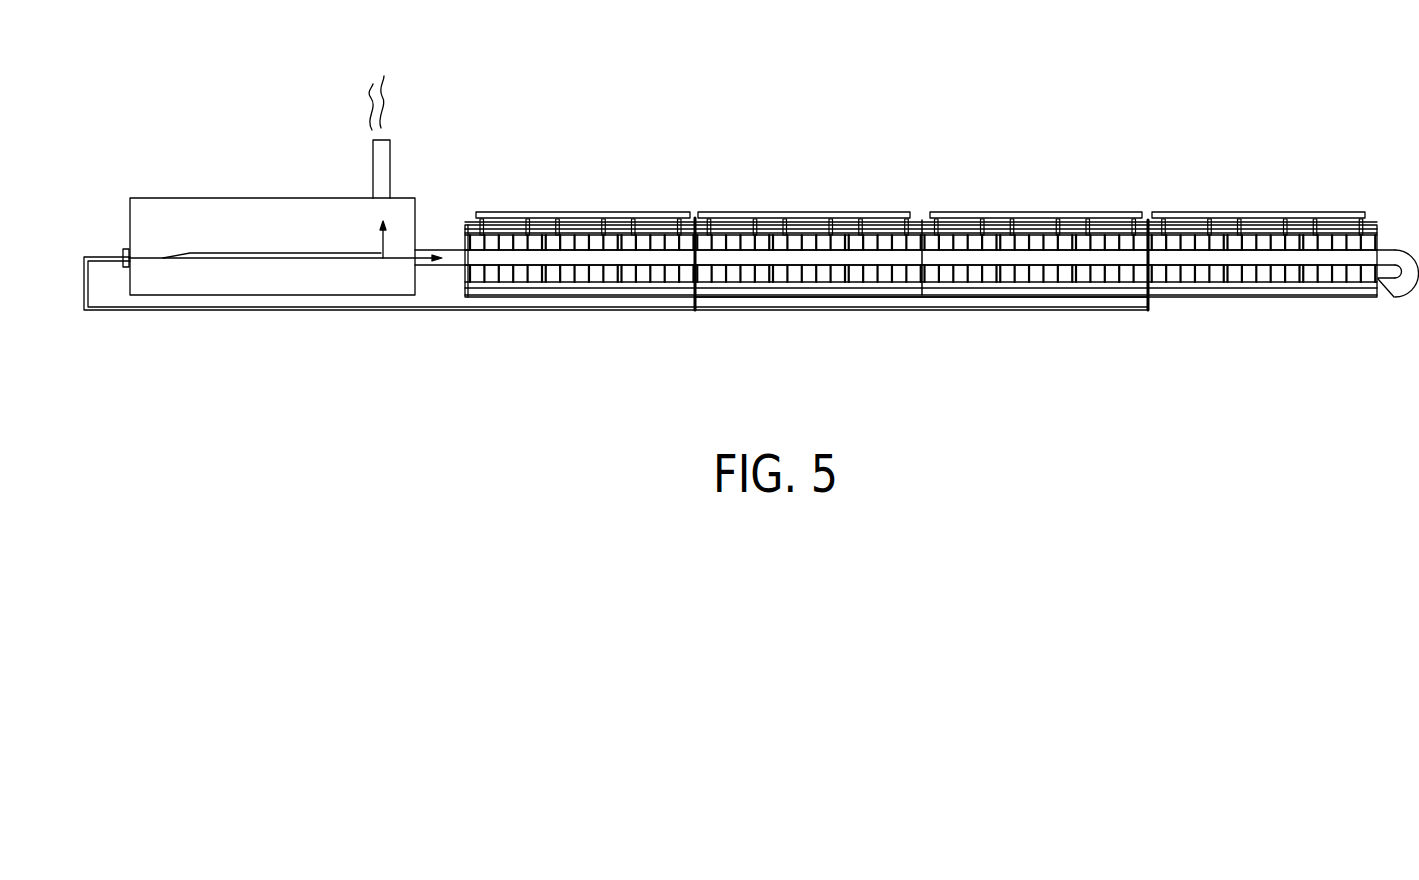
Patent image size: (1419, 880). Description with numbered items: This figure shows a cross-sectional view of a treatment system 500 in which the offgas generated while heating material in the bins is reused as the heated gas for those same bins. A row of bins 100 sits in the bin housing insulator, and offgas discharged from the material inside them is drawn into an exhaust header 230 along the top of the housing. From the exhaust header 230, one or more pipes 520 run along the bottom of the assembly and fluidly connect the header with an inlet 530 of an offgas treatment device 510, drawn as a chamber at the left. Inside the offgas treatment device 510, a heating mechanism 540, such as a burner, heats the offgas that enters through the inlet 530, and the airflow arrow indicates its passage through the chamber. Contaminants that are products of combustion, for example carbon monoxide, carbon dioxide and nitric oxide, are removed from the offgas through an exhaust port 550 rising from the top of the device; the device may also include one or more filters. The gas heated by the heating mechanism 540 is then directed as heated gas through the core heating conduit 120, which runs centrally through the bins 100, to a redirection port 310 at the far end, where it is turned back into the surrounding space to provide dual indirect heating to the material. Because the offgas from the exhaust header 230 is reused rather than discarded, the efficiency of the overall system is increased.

The treatment system 500 is at (761, 77).
The offgas treatment device 510 is at (404, 190).
The pipes 520 is at (106, 312).
The inlet 530 is at (123, 258).
The heating mechanism 540 is at (126, 249).
The exhaust port 550 is at (392, 145).
The bin 100 is at (618, 205).
The exhaust header 230 is at (640, 213).
The core heating conduit 120 is at (1362, 257).
The redirection port 310 is at (1403, 285).